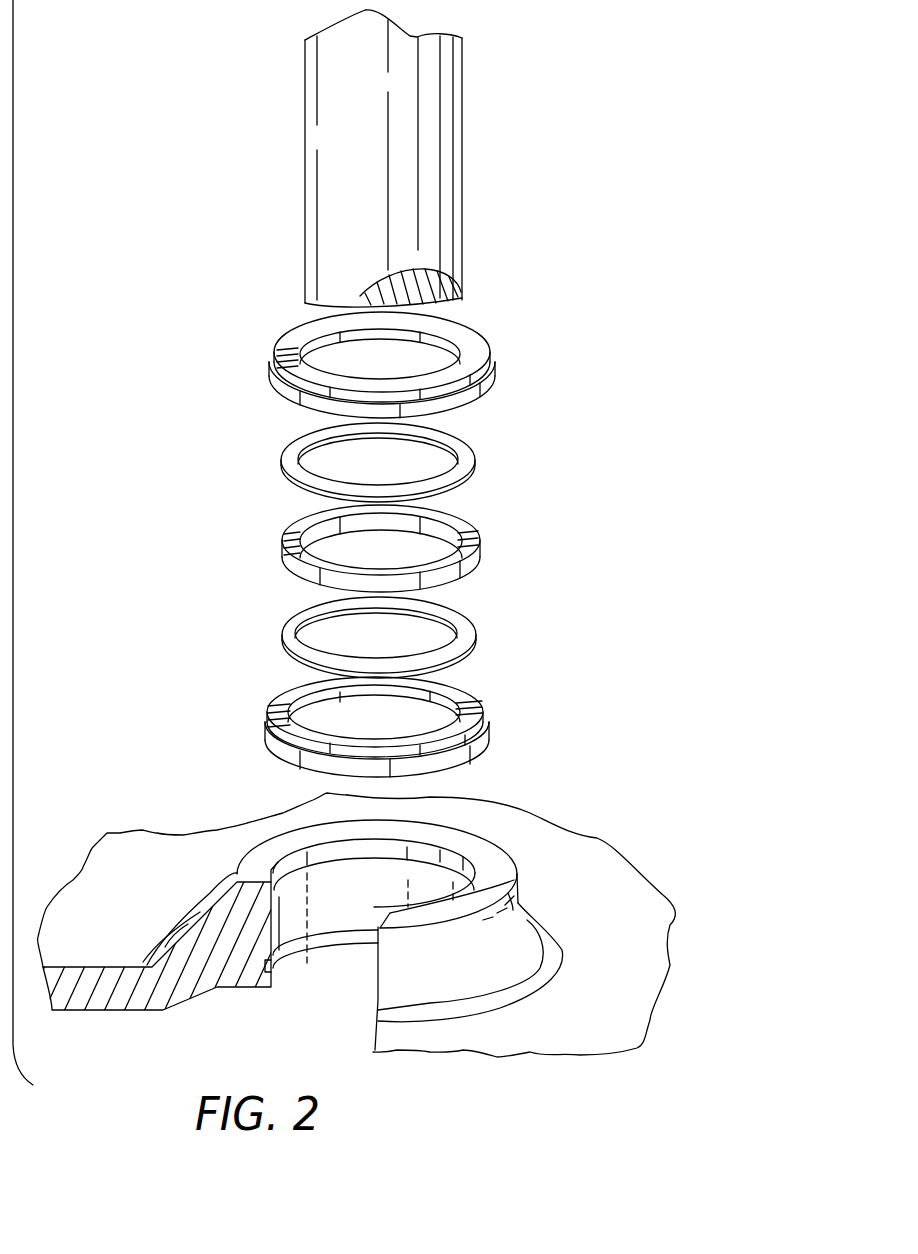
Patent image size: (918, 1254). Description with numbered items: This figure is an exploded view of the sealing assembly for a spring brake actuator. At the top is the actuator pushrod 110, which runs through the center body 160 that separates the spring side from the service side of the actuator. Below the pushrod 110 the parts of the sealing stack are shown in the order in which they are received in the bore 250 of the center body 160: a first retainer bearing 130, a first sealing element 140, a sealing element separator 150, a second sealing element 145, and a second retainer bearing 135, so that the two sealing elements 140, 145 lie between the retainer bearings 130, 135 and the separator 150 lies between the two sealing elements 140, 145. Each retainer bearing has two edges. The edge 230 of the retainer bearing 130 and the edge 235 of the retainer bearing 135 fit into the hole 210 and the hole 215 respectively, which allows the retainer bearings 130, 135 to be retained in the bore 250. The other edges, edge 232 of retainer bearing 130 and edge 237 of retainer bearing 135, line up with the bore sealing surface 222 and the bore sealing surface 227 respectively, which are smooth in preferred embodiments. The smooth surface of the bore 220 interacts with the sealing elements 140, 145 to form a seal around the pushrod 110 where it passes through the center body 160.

The actuator pushrod 110 is at (435, 195).
The bore 250 is at (452, 298).
The retainer bearing 130 is at (483, 340).
The edge 232 is at (277, 367).
The edge 230 is at (273, 393).
The sealing element 140 is at (473, 450).
The sealing element separator 150 is at (480, 550).
The sealing element 145 is at (468, 628).
The retainer bearing 135 is at (480, 712).
The edge 235 is at (267, 718).
The edge 237 is at (293, 758).
The center body 160 is at (147, 987).
The hole 210 is at (230, 903).
The bore 220 is at (350, 918).
The bore sealing surface 222 is at (512, 866).
The hole 215 is at (263, 967).
The bore sealing surface 227 is at (337, 950).